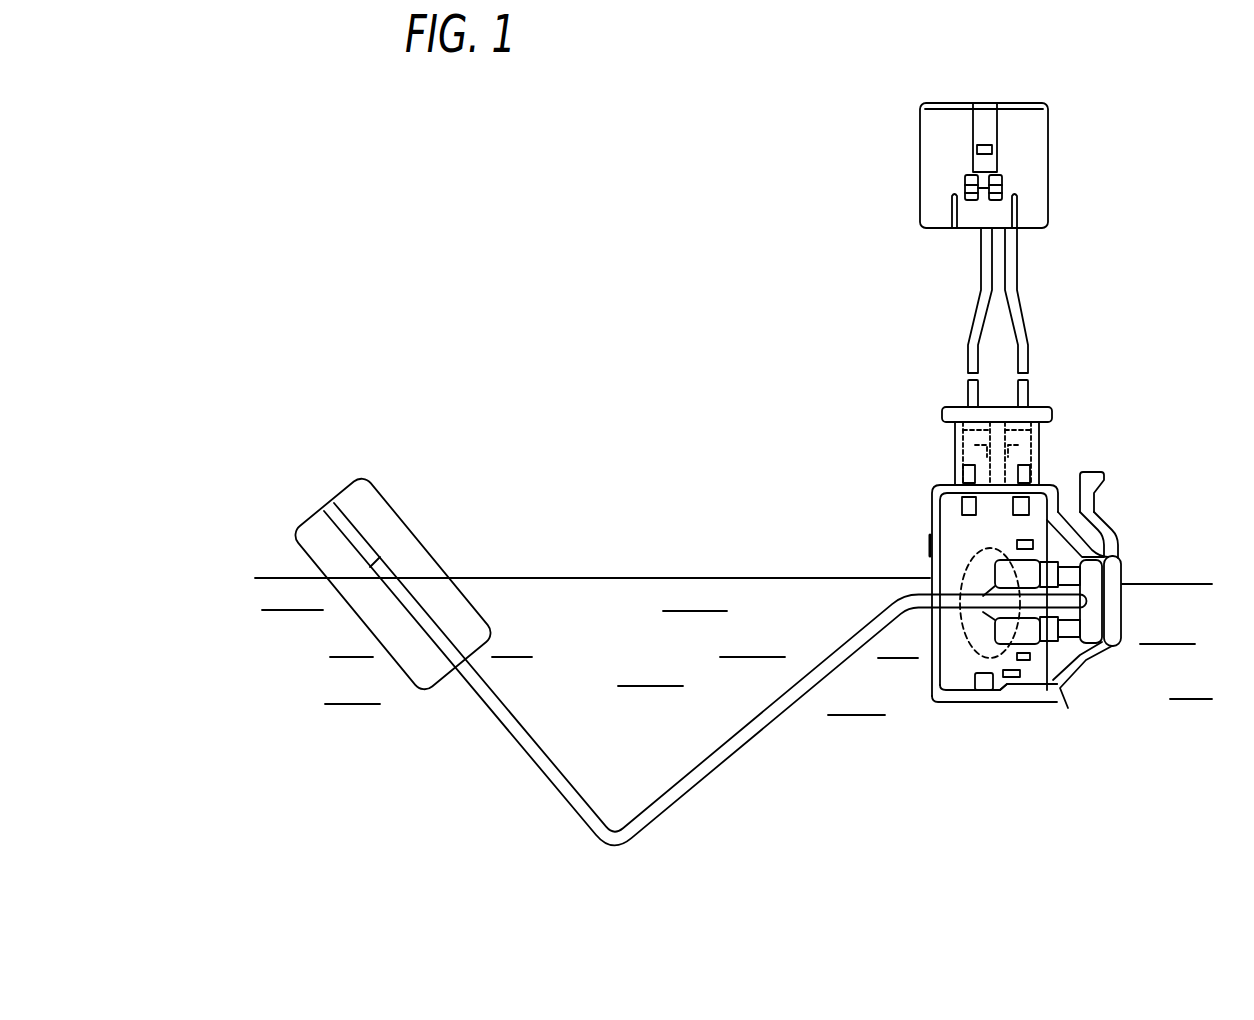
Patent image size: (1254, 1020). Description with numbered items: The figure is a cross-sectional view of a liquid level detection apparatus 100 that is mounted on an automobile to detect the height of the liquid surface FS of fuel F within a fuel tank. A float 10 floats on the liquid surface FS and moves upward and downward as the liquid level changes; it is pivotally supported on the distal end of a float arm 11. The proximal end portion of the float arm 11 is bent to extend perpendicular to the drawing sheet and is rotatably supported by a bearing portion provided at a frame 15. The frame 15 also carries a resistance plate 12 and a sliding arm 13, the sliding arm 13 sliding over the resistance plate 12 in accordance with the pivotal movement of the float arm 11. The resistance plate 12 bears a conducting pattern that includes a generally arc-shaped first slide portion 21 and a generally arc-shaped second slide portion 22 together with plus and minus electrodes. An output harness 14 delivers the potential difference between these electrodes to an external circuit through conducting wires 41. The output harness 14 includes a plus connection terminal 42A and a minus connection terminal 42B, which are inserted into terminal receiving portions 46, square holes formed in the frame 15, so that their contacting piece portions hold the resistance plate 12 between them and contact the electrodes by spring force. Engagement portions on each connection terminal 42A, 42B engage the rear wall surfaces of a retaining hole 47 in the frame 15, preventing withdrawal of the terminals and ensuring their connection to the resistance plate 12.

The liquid level detection apparatus 100 is at (1072, 104).
The output harness 14 is at (908, 164).
The conducting wires 41 is at (977, 315).
The terminal receiving portions 46 is at (1002, 433).
The retaining hole 47 is at (975, 472).
The plus connection terminal 42A is at (964, 510).
The minus connection terminal 42B is at (1030, 510).
The sliding arm 13 is at (1000, 562).
The resistance plate 12 is at (931, 664).
The first slide portion 21 is at (970, 692).
The frame 15 is at (1023, 695).
The second slide portion 22 is at (1058, 692).
The float 10 is at (398, 518).
The float arm 11 is at (510, 724).
The fuel F is at (426, 752).
The liquid surface FS is at (553, 574).